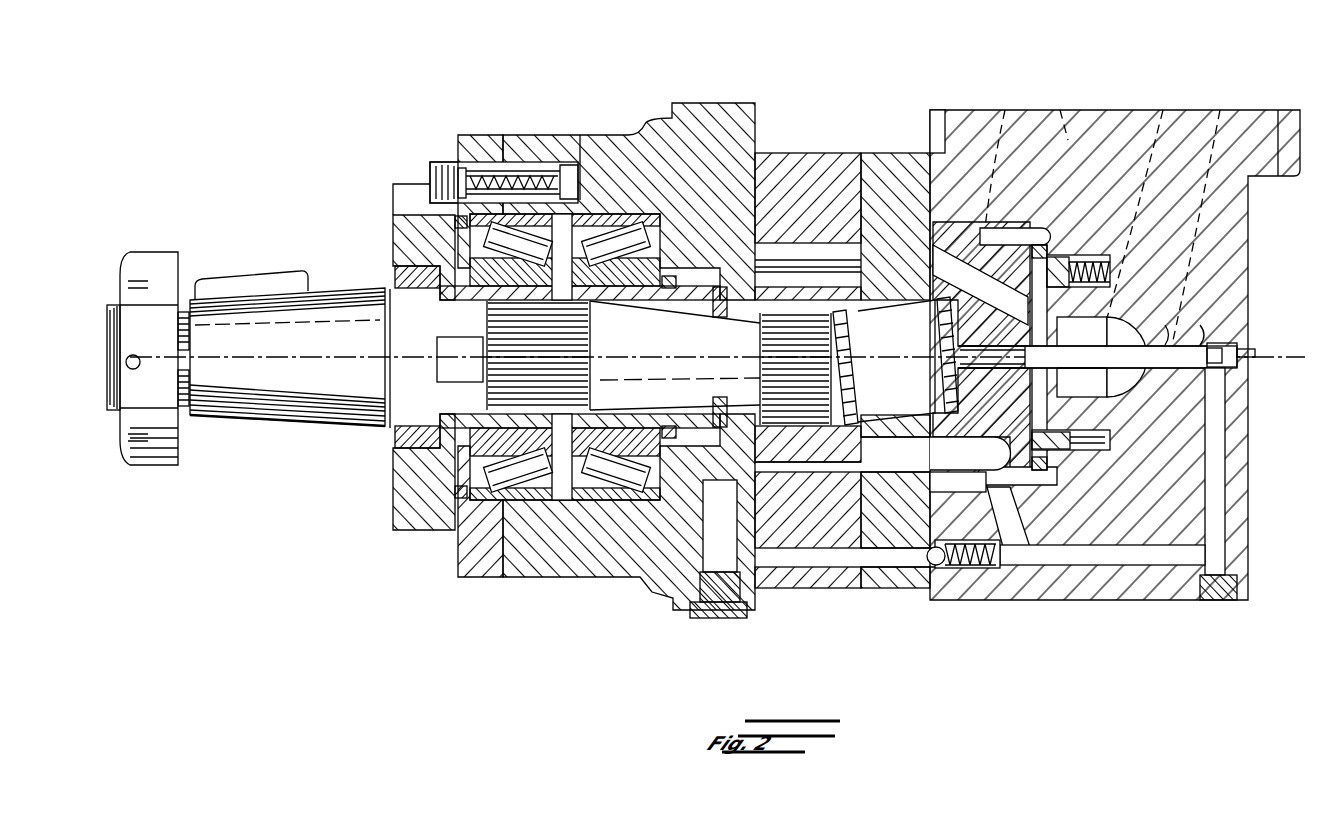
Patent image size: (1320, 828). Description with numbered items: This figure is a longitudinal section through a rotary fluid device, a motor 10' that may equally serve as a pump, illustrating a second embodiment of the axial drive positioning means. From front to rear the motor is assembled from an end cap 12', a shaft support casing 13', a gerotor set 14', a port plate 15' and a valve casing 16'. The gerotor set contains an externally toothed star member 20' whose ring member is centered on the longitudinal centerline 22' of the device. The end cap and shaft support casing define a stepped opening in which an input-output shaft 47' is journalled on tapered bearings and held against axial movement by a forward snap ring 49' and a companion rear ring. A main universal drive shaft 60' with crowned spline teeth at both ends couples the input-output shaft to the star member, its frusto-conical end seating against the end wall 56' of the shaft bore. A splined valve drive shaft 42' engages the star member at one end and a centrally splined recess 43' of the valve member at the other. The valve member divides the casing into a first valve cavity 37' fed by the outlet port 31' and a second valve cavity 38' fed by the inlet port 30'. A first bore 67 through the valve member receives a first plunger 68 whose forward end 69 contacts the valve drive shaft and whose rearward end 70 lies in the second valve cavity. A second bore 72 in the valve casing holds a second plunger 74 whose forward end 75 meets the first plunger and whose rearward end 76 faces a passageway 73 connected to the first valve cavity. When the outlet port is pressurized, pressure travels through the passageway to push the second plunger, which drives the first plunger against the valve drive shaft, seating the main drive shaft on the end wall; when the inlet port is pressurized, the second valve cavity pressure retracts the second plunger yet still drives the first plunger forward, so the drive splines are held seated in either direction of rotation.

The motor 10' is at (858, 97).
The end cap 12' is at (410, 330).
The shaft support casing 13' is at (592, 355).
The gerotor set 14' is at (808, 353).
The port plate 15' is at (895, 353).
The valve casing 16' is at (1115, 333).
The star member 20' is at (883, 454).
The longitudinal centerline 22' is at (675, 355).
The inlet port 30' is at (1166, 206).
The outlet port 31' is at (1026, 147).
The first valve cavity 37' is at (1000, 351).
The second valve cavity 38' is at (1082, 357).
The valve drive shaft 42' is at (847, 362).
The centrally splined recess 43' is at (981, 396).
The input-output shaft 47' is at (295, 358).
The forward snap ring 49' is at (981, 346).
The end wall 56' is at (420, 357).
The main universal drive shaft 60' is at (569, 355).
The first bore 67 is at (975, 370).
The first plunger 68 is at (950, 372).
The forward end 69 is at (858, 362).
The rearward end 70 is at (1108, 370).
The second bore 72 is at (1202, 335).
The passageway 73 is at (1225, 425).
The second plunger 74 is at (1172, 340).
The forward end 75 is at (1112, 330).
The rearward end 76 is at (1248, 350).